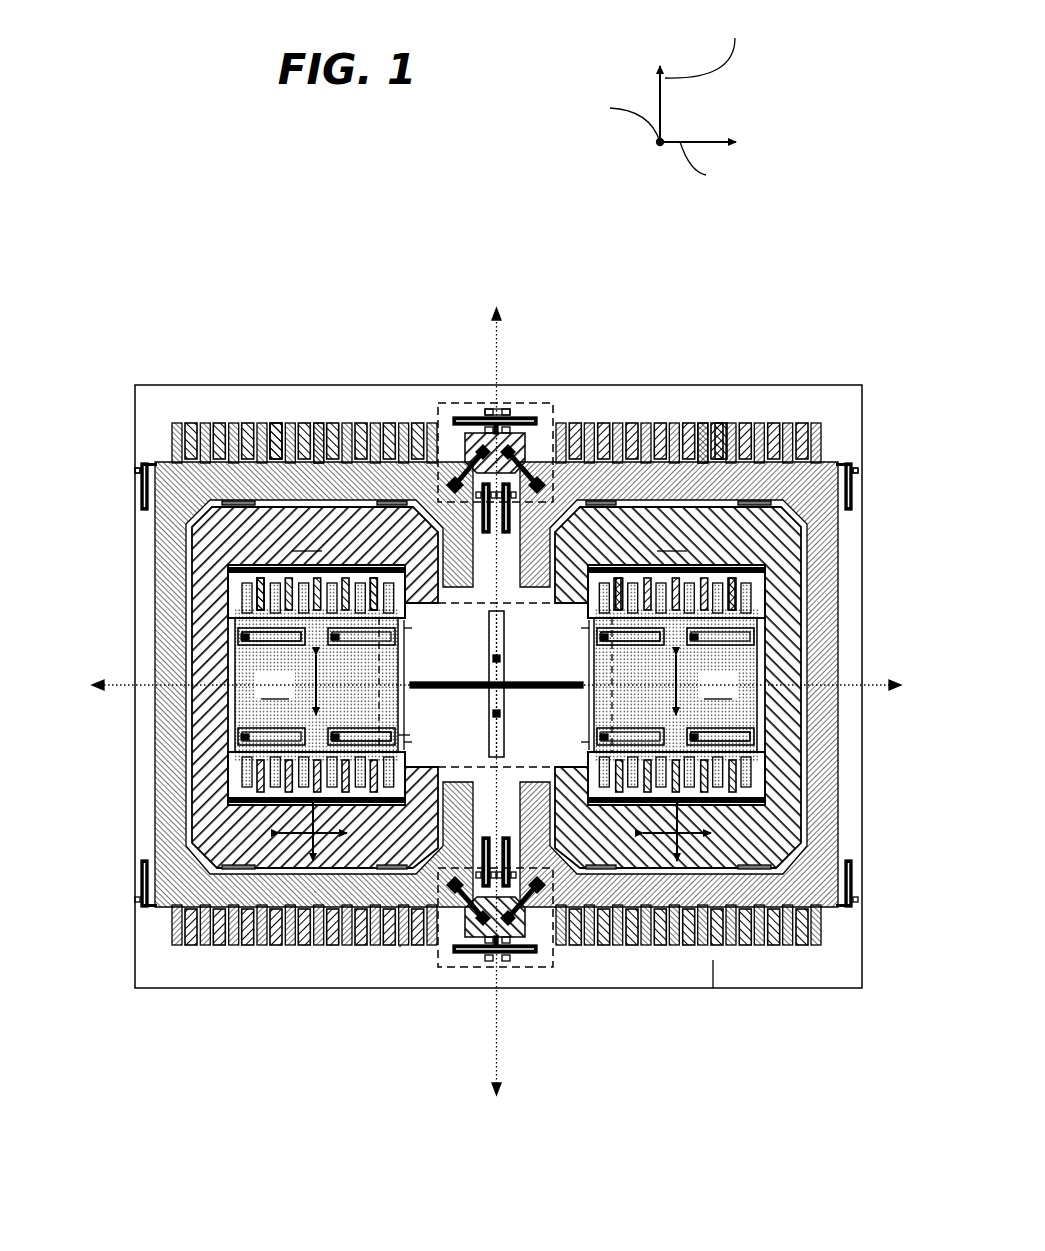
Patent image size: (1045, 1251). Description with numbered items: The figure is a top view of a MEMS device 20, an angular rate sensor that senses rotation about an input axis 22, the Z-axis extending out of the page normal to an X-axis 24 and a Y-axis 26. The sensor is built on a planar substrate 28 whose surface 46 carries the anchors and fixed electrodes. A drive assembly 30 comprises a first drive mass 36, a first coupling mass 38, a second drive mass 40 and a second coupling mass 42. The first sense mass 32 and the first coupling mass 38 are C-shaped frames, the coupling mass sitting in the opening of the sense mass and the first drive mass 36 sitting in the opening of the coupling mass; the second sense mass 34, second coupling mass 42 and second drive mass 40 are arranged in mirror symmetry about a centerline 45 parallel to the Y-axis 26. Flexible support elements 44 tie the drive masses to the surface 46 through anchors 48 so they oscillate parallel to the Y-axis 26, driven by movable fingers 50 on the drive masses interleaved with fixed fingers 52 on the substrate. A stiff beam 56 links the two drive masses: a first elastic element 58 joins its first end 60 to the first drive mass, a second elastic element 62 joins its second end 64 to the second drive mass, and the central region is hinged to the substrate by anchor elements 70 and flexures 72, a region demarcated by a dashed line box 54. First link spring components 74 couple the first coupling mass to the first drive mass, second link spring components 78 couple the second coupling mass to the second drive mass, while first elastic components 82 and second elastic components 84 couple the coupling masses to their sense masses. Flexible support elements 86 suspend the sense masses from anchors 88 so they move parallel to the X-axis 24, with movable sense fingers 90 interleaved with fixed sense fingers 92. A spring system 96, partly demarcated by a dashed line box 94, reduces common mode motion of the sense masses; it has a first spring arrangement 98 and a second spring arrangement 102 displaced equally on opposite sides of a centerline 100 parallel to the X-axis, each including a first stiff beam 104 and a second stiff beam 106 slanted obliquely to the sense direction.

The MEMS device 20 is at (496, 687).
The input axis 22 is at (657, 150).
The X-axis 24 is at (706, 140).
The Y-axis 26 is at (657, 75).
The planar substrate 28 is at (713, 962).
The drive assembly 30 is at (238, 856).
The first sense mass 32 is at (268, 432).
The second sense mass 34 is at (710, 432).
The first drive mass 36 is at (316, 685).
The first coupling mass 38 is at (315, 687).
The second drive mass 40 is at (675, 685).
The second coupling mass 42 is at (678, 687).
The flexible support elements 44 is at (260, 643).
The centerline 45 is at (508, 402).
The surface 46 is at (806, 980).
The anchors 48 is at (242, 637).
The movable fingers 50 is at (374, 580).
The fixed fingers 52 is at (260, 580).
The dashed line box 54 is at (400, 948).
The stiff beam 56 is at (482, 682).
The first elastic element 58 is at (408, 630).
The first end 60 is at (408, 738).
The second elastic element 62 is at (585, 630).
The second end 64 is at (577, 705).
The anchor element 70 is at (500, 660).
The flexure 72 is at (502, 652).
The first link spring components 74 is at (232, 602).
The second link spring components 78 is at (761, 602).
The first elastic components 82 is at (240, 500).
The second elastic components 84 is at (600, 500).
The flexible support elements 86 is at (138, 468).
The anchors 88 is at (145, 462).
The movable sense fingers 90 is at (318, 430).
The fixed sense fingers 92 is at (276, 424).
The dashed line box 94 is at (503, 413).
The spring system 96 is at (489, 394).
The first spring arrangement 98 is at (460, 392).
The centerline 100 is at (400, 736).
The second spring arrangement 102 is at (477, 985).
The first stiff beam 104 is at (453, 478).
The second stiff beam 106 is at (524, 455).